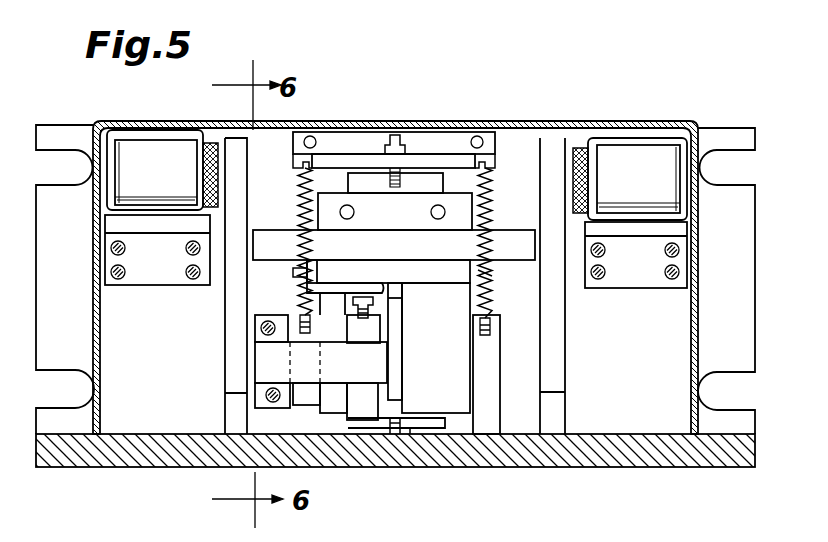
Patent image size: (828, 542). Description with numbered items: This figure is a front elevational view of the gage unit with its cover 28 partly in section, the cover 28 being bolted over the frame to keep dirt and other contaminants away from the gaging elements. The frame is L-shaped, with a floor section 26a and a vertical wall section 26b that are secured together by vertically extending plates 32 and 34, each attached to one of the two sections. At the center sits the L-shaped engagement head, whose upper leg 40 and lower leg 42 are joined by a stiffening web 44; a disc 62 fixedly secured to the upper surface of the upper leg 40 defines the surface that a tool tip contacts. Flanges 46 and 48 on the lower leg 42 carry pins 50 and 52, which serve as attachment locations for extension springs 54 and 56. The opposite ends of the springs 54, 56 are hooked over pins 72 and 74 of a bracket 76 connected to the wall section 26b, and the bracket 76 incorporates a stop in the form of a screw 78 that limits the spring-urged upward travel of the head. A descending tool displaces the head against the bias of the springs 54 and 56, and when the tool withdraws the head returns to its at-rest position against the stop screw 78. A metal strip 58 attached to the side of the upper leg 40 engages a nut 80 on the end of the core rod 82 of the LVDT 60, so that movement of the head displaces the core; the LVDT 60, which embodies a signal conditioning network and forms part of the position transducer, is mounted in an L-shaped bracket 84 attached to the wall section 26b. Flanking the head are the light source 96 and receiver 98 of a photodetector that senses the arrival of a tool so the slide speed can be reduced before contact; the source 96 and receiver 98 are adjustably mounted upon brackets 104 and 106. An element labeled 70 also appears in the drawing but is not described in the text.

The floor section 26a is at (600, 452).
The vertical wall section 26b is at (655, 408).
The cover 28 is at (571, 121).
The vertically extending plate 32 is at (230, 330).
The vertically extending plate 34 is at (557, 365).
The upper leg 40 is at (440, 270).
The lower leg 42 is at (440, 394).
The stiffening web 44 is at (401, 336).
The flange 46 is at (302, 393).
The flange 48 is at (486, 392).
The pin 50 is at (315, 340).
The pin 52 is at (490, 331).
The spring 54 is at (300, 202).
The spring 56 is at (491, 278).
The metal strip 58 is at (332, 291).
The LVDT 60 is at (370, 415).
The disc 62 is at (510, 237).
The carriage block 70 is at (432, 212).
The pin 72 is at (318, 160).
The pin 74 is at (492, 162).
The bracket 76 is at (438, 139).
The screw 78 is at (396, 134).
The nut 80 is at (366, 299).
The core rod 82 is at (371, 309).
The L-shaped bracket 84 is at (263, 357).
The light source 96 is at (638, 190).
The receiver 98 is at (156, 185).
The bracket 104 is at (165, 258).
The bracket 106 is at (641, 268).